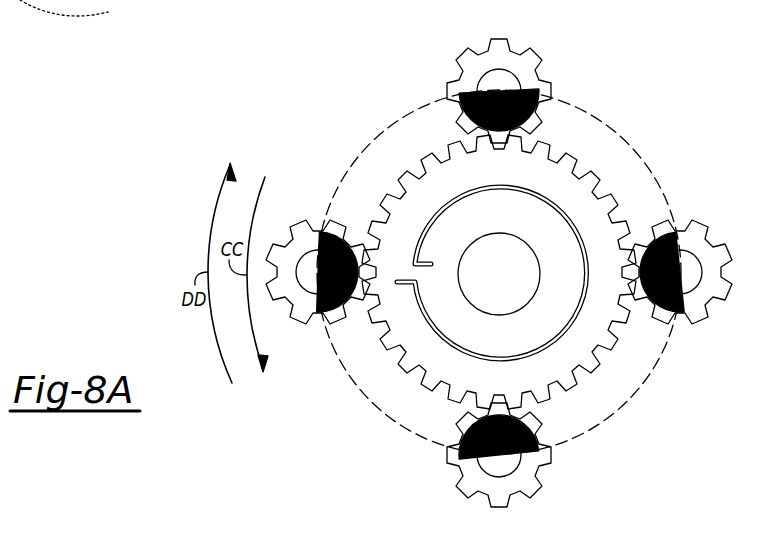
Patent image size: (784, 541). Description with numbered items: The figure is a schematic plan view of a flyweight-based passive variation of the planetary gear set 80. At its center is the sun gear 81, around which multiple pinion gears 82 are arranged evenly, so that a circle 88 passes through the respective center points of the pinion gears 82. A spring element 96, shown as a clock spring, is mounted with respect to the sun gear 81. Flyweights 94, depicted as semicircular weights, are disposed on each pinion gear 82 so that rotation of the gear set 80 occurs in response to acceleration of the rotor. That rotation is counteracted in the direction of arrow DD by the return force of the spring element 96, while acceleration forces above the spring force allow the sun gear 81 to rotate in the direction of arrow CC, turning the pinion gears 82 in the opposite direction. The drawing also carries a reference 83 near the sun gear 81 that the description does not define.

The planetary gear set 80 is at (326, 128).
The sun gear 81 is at (432, 196).
The pinion gears 82 is at (462, 78).
The gear teeth 83 is at (398, 366).
The circle 88 is at (378, 340).
The flyweights 94 is at (507, 88).
The spring element 96 is at (567, 218).